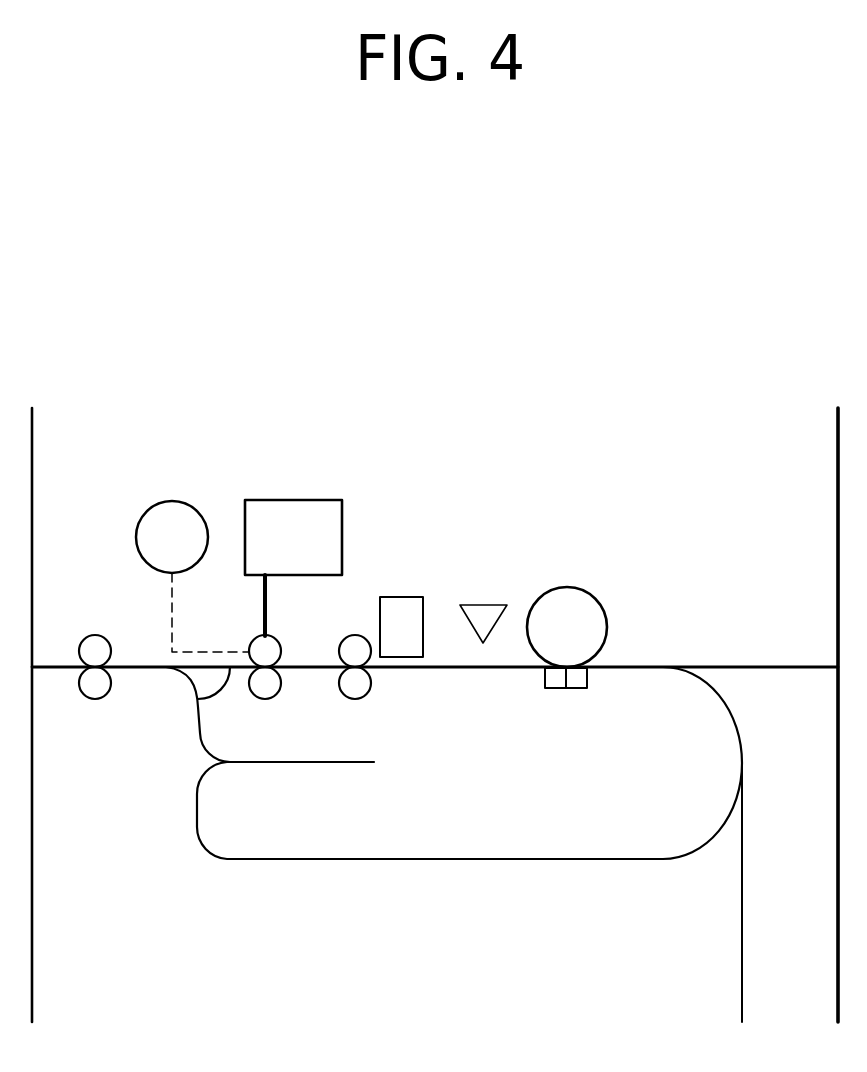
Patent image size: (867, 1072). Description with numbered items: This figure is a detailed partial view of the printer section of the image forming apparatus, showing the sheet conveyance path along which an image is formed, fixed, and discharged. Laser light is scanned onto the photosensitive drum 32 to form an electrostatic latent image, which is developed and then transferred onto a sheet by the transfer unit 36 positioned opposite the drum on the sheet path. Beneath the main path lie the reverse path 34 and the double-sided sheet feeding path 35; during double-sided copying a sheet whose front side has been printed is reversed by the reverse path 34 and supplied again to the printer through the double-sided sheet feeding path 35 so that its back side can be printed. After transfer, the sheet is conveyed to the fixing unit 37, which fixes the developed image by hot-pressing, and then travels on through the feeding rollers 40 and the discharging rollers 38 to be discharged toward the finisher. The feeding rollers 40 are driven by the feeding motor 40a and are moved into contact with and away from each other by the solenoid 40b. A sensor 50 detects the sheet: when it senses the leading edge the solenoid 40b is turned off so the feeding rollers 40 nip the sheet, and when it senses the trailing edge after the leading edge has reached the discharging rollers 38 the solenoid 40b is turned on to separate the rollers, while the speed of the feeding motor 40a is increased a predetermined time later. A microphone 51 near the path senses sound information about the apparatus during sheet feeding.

The photosensitive drum 32 is at (570, 588).
The reverse path 34 is at (297, 763).
The double-sided sheet feeding path 35 is at (510, 860).
The transfer unit 36 is at (567, 690).
The fixing unit 37 is at (372, 680).
The discharging rollers 38 is at (98, 636).
The feeding rollers 40 is at (282, 681).
The feeding motor 40a is at (172, 500).
The solenoid 40b is at (297, 500).
The sensor 50 is at (493, 605).
The microphone 51 is at (405, 600).